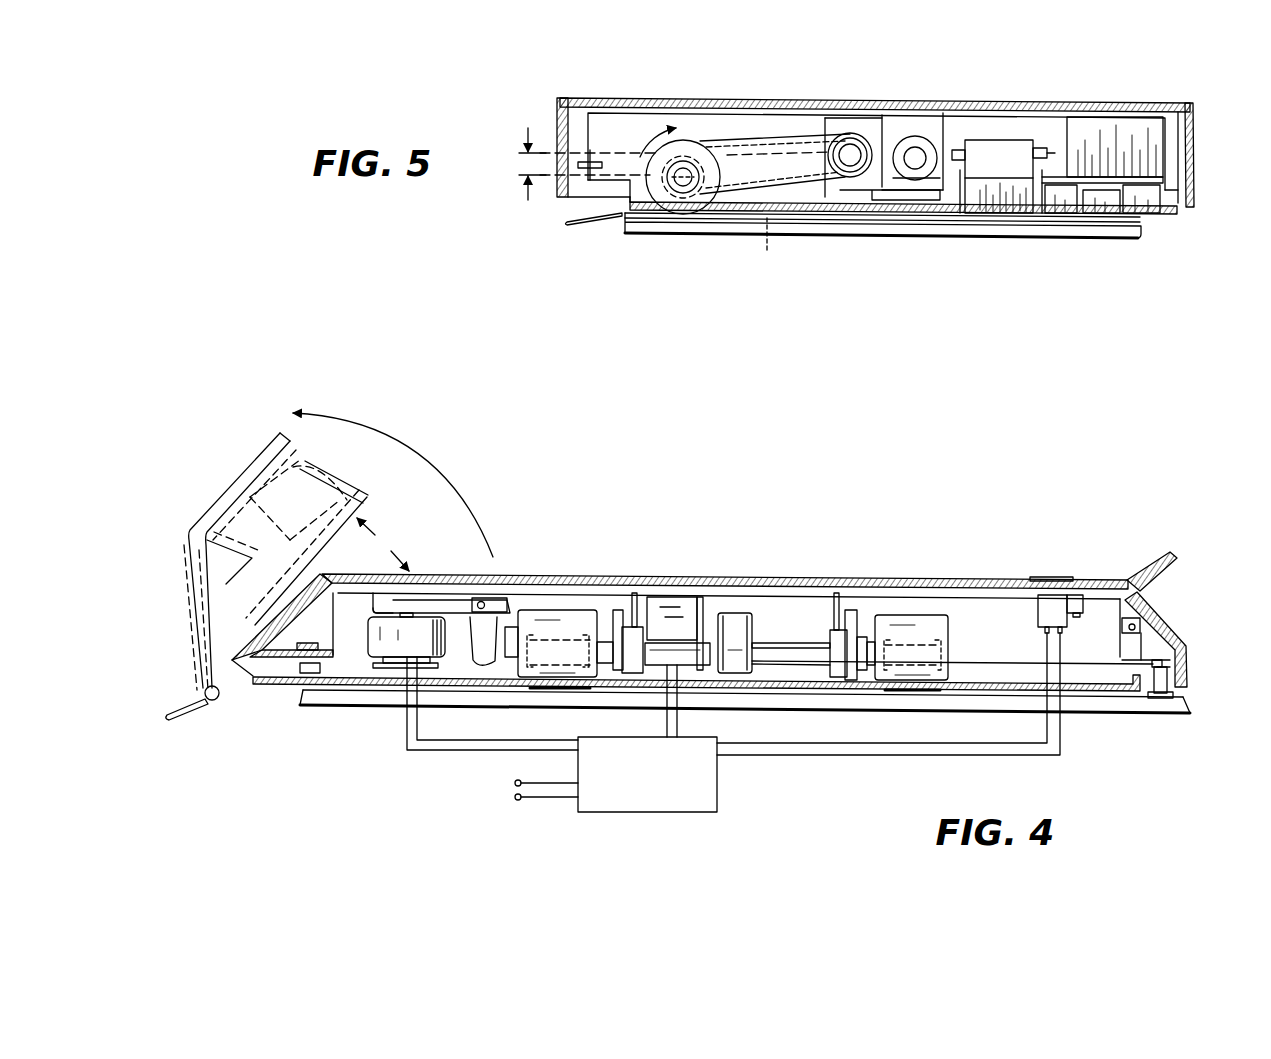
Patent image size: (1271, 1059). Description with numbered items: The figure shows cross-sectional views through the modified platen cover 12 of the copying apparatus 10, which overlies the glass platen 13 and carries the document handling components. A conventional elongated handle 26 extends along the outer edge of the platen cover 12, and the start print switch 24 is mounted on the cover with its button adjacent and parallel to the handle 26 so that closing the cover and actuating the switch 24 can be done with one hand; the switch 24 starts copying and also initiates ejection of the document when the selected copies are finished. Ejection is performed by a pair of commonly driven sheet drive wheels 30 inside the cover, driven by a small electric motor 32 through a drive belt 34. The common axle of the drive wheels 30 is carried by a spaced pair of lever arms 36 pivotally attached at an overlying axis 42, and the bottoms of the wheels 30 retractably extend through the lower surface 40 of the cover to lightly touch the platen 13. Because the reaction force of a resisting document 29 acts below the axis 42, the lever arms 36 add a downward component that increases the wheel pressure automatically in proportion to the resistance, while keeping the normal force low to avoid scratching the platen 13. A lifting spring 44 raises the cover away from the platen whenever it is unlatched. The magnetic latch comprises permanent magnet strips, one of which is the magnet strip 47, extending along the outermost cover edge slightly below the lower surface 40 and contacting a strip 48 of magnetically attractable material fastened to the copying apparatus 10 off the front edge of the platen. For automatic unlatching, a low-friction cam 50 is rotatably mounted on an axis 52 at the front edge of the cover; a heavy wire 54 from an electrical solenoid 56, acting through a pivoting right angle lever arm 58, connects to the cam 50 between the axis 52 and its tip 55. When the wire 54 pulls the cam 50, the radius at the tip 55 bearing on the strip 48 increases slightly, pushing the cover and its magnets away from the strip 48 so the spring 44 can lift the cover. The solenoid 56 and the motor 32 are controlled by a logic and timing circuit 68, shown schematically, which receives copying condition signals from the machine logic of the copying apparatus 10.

In FIG. 5, the copying apparatus 10 is at (1075, 88).
In FIG. 4, the copying apparatus 10 is at (912, 517).
In FIG. 5, the platen cover 12 is at (1195, 135).
In FIG. 4, the platen cover 12 is at (484, 572).
In FIG. 5, the platen 13 is at (1030, 226).
In FIG. 4, the platen 13 is at (1153, 715).
In FIG. 4, the start print switch 24 is at (1047, 578).
In FIG. 4, the handle 26 is at (1137, 572).
In FIG. 5, the document 29 is at (603, 226).
In FIG. 5, the sheet drive wheels 30 is at (703, 130).
In FIG. 4, the sheet drive wheels 30 is at (573, 622).
In FIG. 5, the electric motor 32 is at (915, 147).
In FIG. 4, the electric motor 32 is at (688, 610).
In FIG. 4, the drive belt 34 is at (740, 614).
In FIG. 4, the lever arms 36 is at (618, 610).
In FIG. 5, the lower surface 40 is at (846, 217).
In FIG. 4, the lower surface 40 is at (1097, 697).
In FIG. 5, the axis 42 is at (850, 148).
In FIG. 4, the axis 42 is at (640, 620).
In FIG. 4, the spring 44 is at (197, 705).
In FIG. 5, the permanent magnet strip 47 is at (1098, 207).
In FIG. 5, the strip of magnetically attractable material 48 is at (960, 215).
In FIG. 4, the strip of magnetically attractable material 48 is at (1173, 695).
In FIG. 5, the cam 50 is at (996, 150).
In FIG. 4, the cam 50 is at (1152, 650).
In FIG. 5, the axis 52 is at (1050, 148).
In FIG. 4, the axis 52 is at (1142, 617).
In FIG. 4, the wire 54 is at (992, 662).
In FIG. 4, the tip 55 is at (1165, 686).
In FIG. 4, the solenoid 56 is at (383, 647).
In FIG. 4, the right angle lever arm 58 is at (480, 662).
In FIG. 4, the logic and timing circuit 68 is at (717, 790).